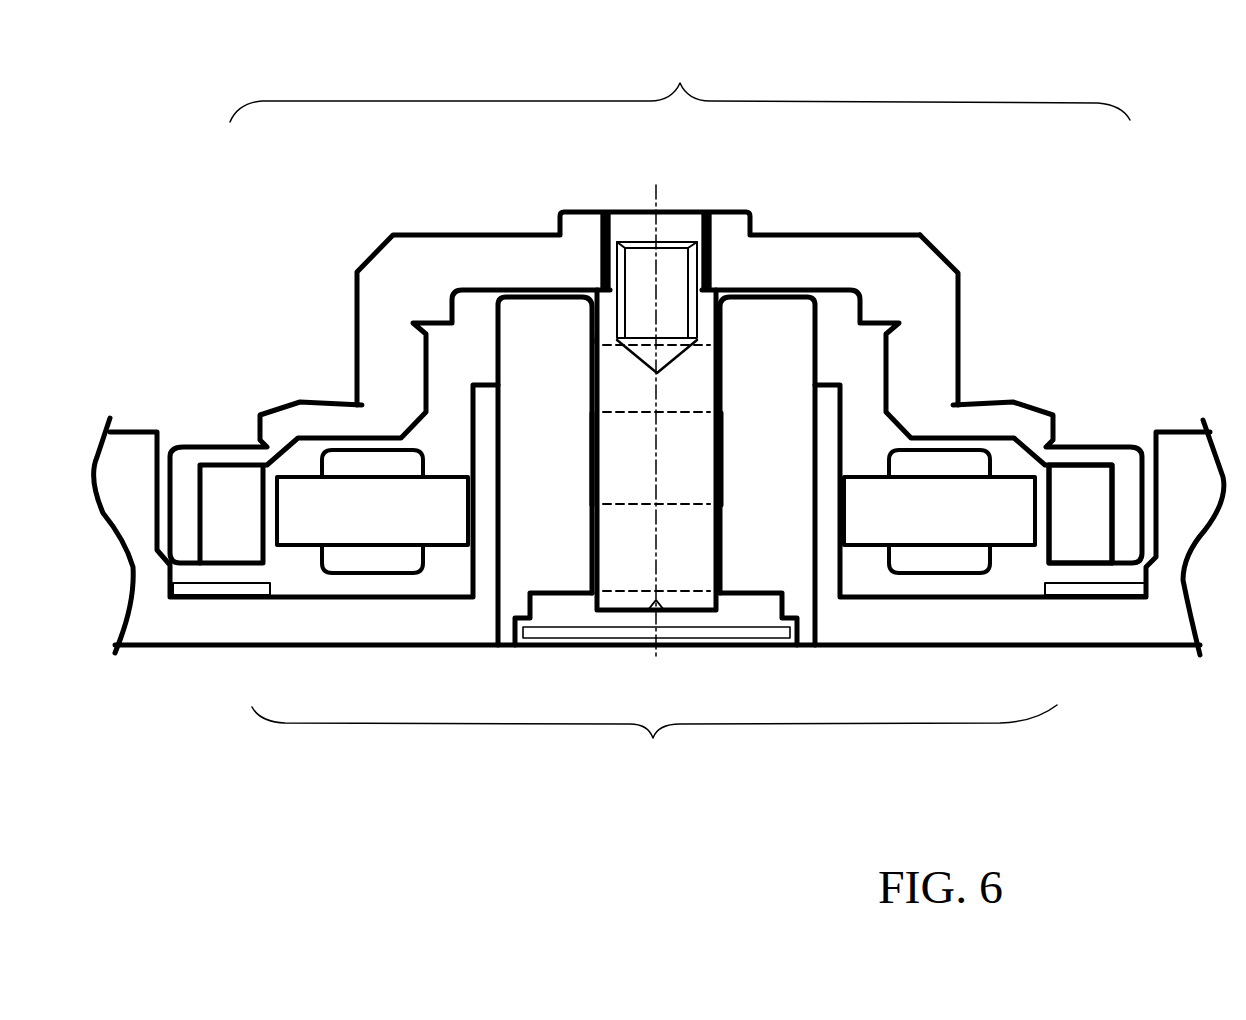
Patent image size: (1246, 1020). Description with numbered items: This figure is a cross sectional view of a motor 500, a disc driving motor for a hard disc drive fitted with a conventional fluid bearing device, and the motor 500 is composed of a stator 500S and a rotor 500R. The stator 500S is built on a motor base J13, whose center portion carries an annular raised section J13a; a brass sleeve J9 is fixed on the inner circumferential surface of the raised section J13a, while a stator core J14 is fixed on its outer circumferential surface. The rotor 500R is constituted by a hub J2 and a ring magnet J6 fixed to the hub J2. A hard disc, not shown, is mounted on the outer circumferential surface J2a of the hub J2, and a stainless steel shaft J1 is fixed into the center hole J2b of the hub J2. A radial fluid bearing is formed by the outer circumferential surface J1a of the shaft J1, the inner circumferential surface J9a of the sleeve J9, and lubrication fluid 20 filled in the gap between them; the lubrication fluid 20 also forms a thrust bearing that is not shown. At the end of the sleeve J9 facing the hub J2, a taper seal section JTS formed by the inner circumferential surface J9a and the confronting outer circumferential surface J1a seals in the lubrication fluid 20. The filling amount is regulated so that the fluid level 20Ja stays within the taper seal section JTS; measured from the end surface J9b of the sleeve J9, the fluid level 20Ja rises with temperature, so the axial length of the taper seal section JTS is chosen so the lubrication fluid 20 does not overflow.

The motor 500 is at (1240, 248).
The rotor 500R is at (720, 73).
The stator 500S is at (694, 778).
The lubrication fluid 20 is at (590, 453).
The fluid level 20Ja is at (722, 300).
The shaft J1 is at (592, 362).
The outer circumferential surface of the shaft J1a is at (595, 388).
The hub J2 is at (875, 260).
The outer circumferential surface of the hub J2a is at (960, 310).
The center hole of the hub J2b is at (712, 290).
The ring magnet J6 is at (1082, 510).
The sleeve J9 is at (557, 563).
The inner circumferential surface of the sleeve J9a is at (587, 540).
The end surface of the sleeve J9b is at (772, 297).
The motor base J13 is at (285, 620).
The raised section J13a is at (483, 500).
The stator core J14 is at (1008, 530).
The taper seal section JTS is at (592, 303).